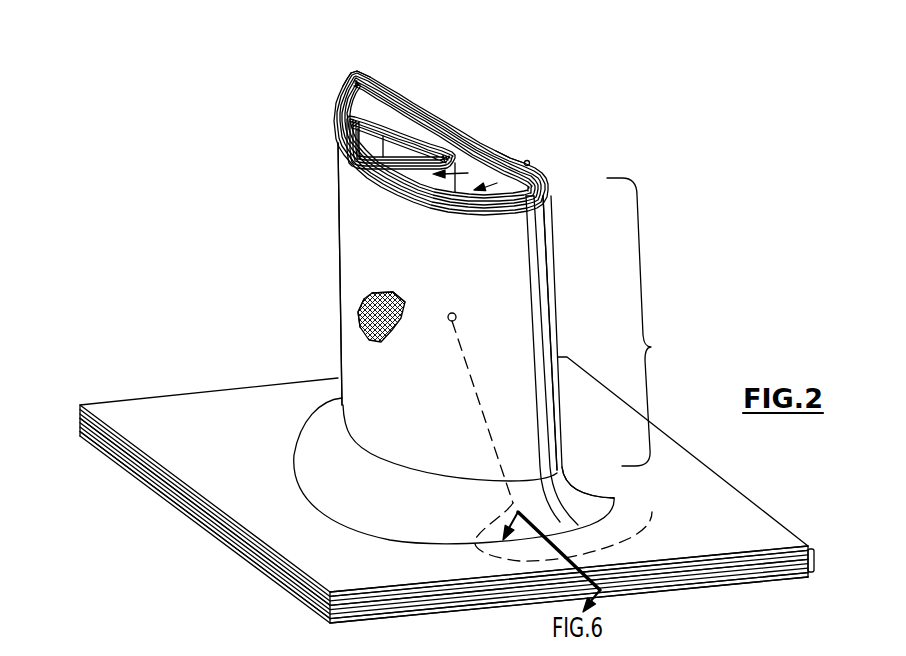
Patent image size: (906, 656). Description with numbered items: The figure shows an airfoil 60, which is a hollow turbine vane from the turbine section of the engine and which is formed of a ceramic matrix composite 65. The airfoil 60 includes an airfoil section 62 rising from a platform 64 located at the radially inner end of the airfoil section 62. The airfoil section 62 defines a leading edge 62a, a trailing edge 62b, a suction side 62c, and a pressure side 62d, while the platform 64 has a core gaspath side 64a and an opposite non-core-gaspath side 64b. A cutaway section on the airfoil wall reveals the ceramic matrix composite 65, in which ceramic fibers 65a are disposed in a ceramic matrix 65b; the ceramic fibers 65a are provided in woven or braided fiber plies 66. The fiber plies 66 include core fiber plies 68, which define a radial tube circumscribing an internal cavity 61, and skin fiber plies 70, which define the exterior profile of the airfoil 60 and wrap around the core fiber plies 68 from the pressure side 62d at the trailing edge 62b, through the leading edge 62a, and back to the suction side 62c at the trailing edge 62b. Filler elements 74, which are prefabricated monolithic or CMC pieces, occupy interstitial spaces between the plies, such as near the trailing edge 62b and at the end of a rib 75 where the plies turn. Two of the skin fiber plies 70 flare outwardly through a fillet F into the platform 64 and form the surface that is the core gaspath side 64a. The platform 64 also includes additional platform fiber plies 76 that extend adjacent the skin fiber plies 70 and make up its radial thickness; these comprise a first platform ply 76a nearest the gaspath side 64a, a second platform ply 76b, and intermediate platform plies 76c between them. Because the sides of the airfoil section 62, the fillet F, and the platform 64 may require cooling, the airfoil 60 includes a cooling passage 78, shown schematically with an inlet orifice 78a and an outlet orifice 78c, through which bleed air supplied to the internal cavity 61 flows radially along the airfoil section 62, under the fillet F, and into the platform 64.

The airfoil 60 is at (172, 245).
The internal cavity 61 is at (533, 208).
The airfoil section 62 is at (651, 347).
The leading edge 62a is at (545, 278).
The trailing edge 62b is at (360, 72).
The suction side 62c is at (357, 238).
The pressure side 62d is at (468, 173).
The platform 64 is at (66, 437).
The core gaspath side 64a is at (194, 468).
The non-core-gaspath side 64b is at (268, 577).
The ceramic matrix composite 65 is at (366, 355).
The ceramic fibers 65a is at (363, 323).
The ceramic matrix 65b is at (370, 295).
The fiber plies 66 is at (401, 122).
The core fiber plies 68 is at (504, 163).
The skin fiber plies 70 is at (529, 156).
The filler elements 74 is at (347, 101).
The rib 75 is at (497, 183).
The platform fiber plies 76 is at (814, 567).
The first platform ply 76a is at (768, 566).
The second platform ply 76b is at (772, 578).
The intermediate platform ply 76c is at (740, 586).
The cooling passage 78 is at (470, 410).
The inlet orifice 78a is at (456, 315).
The outlet orifice 78c is at (660, 512).
The fillet F is at (596, 503).